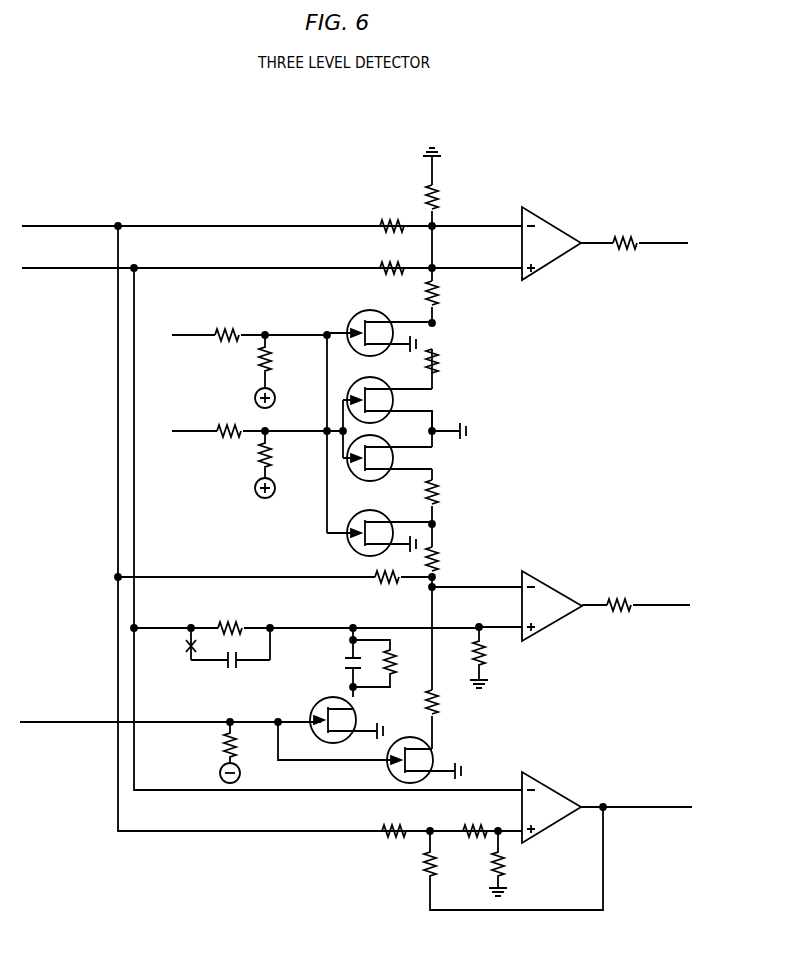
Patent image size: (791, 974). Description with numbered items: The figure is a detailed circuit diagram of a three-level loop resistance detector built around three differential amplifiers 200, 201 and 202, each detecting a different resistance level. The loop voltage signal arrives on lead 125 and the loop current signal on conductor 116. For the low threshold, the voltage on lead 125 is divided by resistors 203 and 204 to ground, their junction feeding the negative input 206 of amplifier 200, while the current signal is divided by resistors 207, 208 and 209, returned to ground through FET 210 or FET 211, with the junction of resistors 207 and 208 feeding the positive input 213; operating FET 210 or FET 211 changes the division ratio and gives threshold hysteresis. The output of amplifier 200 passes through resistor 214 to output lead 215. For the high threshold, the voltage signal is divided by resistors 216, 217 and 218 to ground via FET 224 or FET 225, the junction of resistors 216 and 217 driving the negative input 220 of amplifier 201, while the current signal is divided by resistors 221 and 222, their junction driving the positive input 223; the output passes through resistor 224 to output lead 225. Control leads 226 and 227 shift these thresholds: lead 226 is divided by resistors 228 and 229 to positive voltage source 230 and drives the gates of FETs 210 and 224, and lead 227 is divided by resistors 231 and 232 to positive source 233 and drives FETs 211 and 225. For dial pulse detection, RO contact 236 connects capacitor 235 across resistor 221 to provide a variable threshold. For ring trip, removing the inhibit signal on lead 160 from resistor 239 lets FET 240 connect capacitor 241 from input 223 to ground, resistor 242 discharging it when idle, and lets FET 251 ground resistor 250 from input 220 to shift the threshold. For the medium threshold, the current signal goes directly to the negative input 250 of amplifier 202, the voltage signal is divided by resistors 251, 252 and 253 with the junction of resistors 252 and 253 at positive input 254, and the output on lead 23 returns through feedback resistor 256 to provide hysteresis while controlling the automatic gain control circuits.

The lead 125 is at (88, 226).
The conductor 116 is at (76, 270).
The resistor 203 is at (393, 216).
The resistor 207 is at (393, 258).
The resistor 204 is at (447, 197).
The resistor 208 is at (447, 293).
The resistor 209 is at (447, 361).
The differential amplifier 200 is at (536, 216).
The negative input 206 is at (508, 226).
The positive input 213 is at (503, 270).
The resistor 214 is at (634, 231).
The output lead 215 is at (657, 244).
The lead 226 is at (205, 336).
The resistor 228 is at (270, 325).
The resistor 229 is at (281, 361).
The positive voltage source 230 is at (280, 398).
The lead 227 is at (205, 432).
The resistor 231 is at (279, 421).
The resistor 232 is at (281, 454).
The positive voltage source 233 is at (280, 488).
The FET 210 is at (375, 309).
The FET 211 is at (370, 380).
The FET / output lead 225 is at (360, 482).
The resistor 218 is at (447, 492).
The FET / resistor 224 is at (360, 552).
The resistor 217 is at (447, 559).
The resistor 216 is at (275, 590).
The differential amplifier 201 is at (536, 580).
The negative input 220 is at (488, 587).
The positive input 223 is at (498, 627).
The resistor 222 is at (493, 657).
The resistor 221 is at (306, 618).
The RO contact 236 is at (184, 654).
The capacitor 235 is at (230, 661).
The capacitor 241 is at (339, 662).
The resistor 242 is at (390, 663).
The lead 160 is at (64, 720).
The resistor 239 is at (215, 752).
The FET 240 is at (318, 705).
The FET / resistor 251 is at (428, 740).
The resistor / negative input 250 is at (312, 804).
The resistor 252 is at (474, 820).
The positive input 254 is at (504, 833).
The resistor 253 is at (484, 863).
The feedback resistor 256 is at (498, 858).
The differential amplifier 202 is at (548, 773).
The lead 23 is at (656, 808).